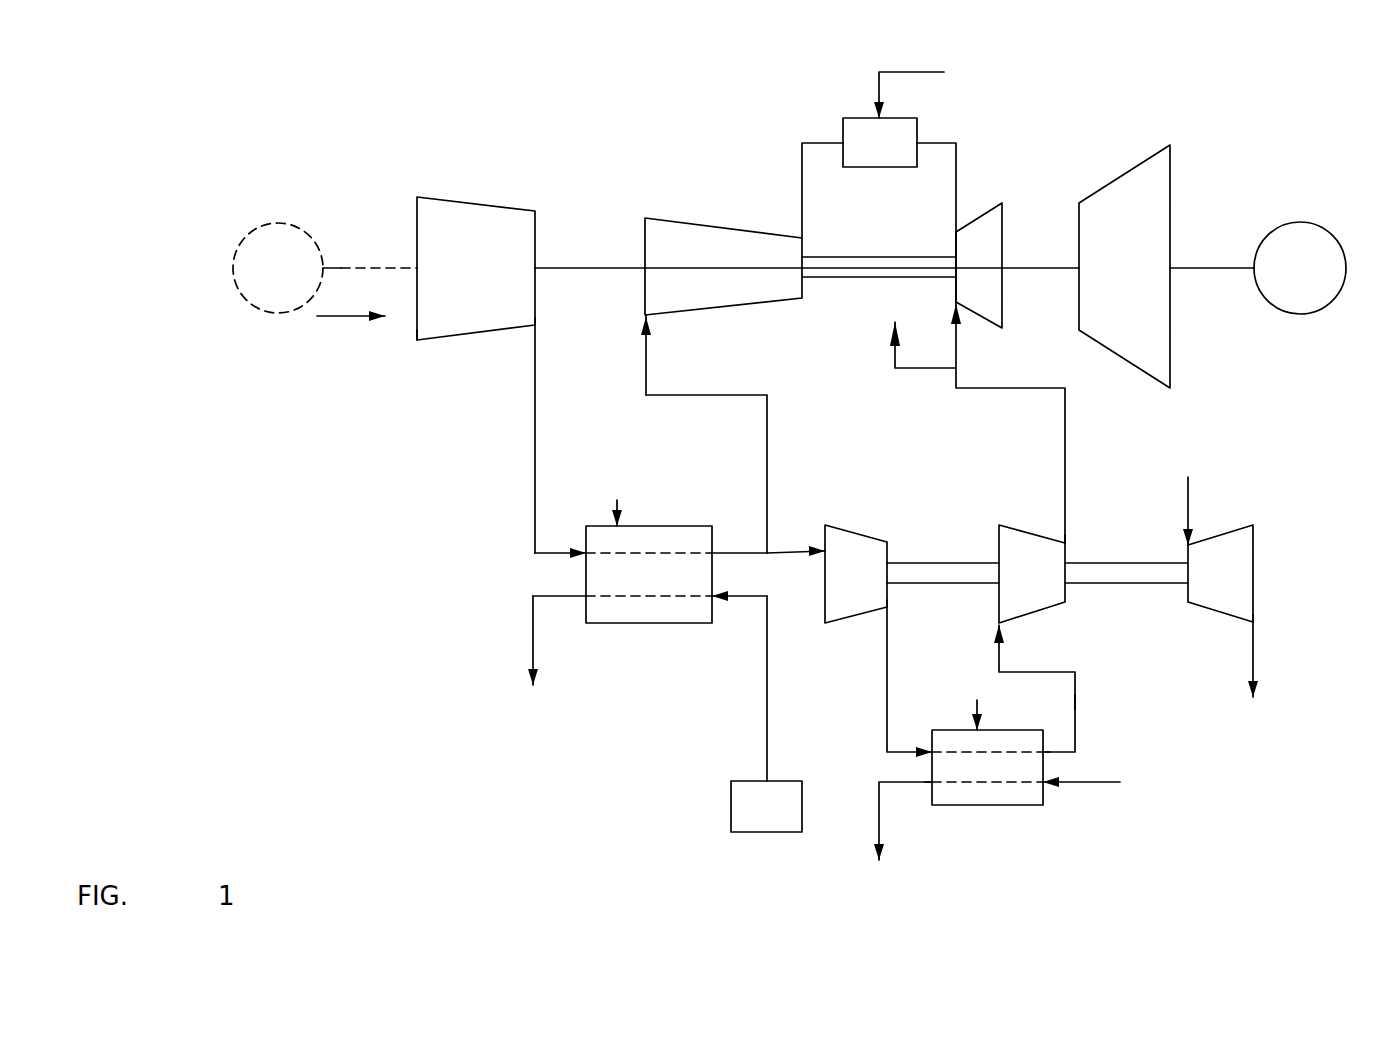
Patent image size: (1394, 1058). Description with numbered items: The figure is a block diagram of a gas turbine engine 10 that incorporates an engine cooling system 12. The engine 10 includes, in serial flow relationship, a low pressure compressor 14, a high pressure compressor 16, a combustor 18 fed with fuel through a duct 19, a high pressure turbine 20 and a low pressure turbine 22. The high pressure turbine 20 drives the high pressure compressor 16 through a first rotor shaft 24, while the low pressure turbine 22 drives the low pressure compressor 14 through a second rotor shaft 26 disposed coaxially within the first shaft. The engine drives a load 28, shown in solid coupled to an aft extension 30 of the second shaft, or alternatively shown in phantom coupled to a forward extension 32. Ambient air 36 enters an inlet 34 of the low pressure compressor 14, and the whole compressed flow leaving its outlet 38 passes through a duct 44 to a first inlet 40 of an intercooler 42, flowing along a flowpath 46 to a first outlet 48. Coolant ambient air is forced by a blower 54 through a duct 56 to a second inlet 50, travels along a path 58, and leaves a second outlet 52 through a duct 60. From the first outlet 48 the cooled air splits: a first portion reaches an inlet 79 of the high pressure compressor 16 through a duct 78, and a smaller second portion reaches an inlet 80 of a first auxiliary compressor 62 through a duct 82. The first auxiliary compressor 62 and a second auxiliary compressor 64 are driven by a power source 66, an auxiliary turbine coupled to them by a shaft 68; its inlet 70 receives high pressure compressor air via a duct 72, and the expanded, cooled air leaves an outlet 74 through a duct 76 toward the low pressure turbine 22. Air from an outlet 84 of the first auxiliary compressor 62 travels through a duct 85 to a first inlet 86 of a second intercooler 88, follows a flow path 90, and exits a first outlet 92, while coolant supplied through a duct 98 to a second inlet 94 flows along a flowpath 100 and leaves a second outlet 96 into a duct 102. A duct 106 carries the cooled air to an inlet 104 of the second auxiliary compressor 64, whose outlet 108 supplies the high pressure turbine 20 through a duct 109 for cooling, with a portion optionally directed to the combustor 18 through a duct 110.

The gas turbine engine 10 is at (1285, 90).
The engine cooling system 12 is at (362, 682).
The low pressure compressor 14 is at (462, 202).
The high pressure compressor 16 is at (710, 226).
The combustor 18 is at (857, 118).
The duct 19 is at (908, 72).
The high pressure turbine 20 is at (1000, 203).
The low pressure turbine 22 is at (1120, 177).
The first rotor shaft 24 is at (845, 257).
The second rotor shaft 26 is at (1065, 268).
The load 28 is at (260, 228).
The aft extension 30 is at (1200, 268).
The forward extension 32 is at (345, 268).
The inlet 34 is at (417, 332).
The ambient air 36 is at (340, 318).
The outlet 38 is at (530, 327).
The first inlet 40 is at (582, 549).
The intercooler 42 is at (617, 500).
The duct 44 is at (533, 433).
The flowpath 46 is at (684, 553).
The first outlet 48 is at (714, 552).
The second inlet 50 is at (712, 600).
The second outlet 52 is at (586, 596).
The blower 54 is at (731, 805).
The duct 56 is at (766, 742).
The path 58 is at (665, 598).
The duct 60 is at (533, 625).
The first auxiliary compressor 62 is at (855, 526).
The second auxiliary compressor 64 is at (1024, 518).
The power source 66 is at (1230, 525).
The shaft 68 is at (967, 563).
The inlet 70 is at (1186, 545).
The duct 72 is at (1190, 490).
The outlet 74 is at (1256, 622).
The duct 76 is at (1252, 650).
The duct 78 is at (648, 372).
The inlet 79 is at (640, 318).
The inlet 80 is at (800, 545).
The duct 82 is at (785, 555).
The outlet 84 is at (885, 608).
The duct 85 is at (886, 677).
The first inlet 86 is at (930, 755).
The intercooler 88 is at (977, 700).
The flow path 90 is at (960, 752).
The first outlet 92 is at (1044, 752).
The second inlet 94 is at (1045, 787).
The second outlet 96 is at (930, 787).
The duct 98 is at (1097, 782).
The flowpath 100 is at (963, 783).
The duct 102 is at (879, 822).
The inlet 104 is at (1003, 625).
The duct 106 is at (1077, 702).
The outlet 108 is at (1065, 545).
The duct 109 is at (1065, 428).
The duct 110 is at (905, 370).